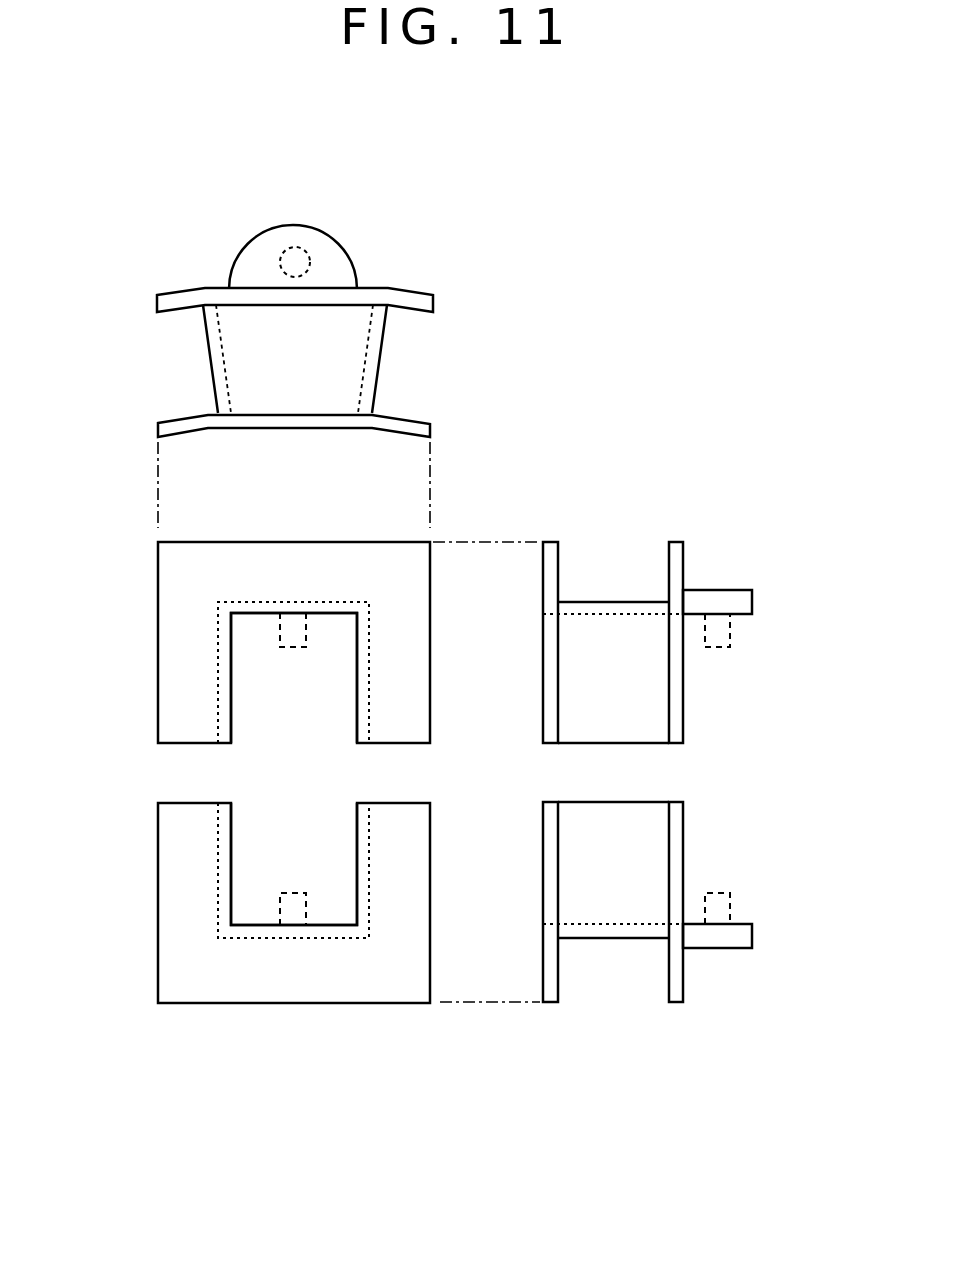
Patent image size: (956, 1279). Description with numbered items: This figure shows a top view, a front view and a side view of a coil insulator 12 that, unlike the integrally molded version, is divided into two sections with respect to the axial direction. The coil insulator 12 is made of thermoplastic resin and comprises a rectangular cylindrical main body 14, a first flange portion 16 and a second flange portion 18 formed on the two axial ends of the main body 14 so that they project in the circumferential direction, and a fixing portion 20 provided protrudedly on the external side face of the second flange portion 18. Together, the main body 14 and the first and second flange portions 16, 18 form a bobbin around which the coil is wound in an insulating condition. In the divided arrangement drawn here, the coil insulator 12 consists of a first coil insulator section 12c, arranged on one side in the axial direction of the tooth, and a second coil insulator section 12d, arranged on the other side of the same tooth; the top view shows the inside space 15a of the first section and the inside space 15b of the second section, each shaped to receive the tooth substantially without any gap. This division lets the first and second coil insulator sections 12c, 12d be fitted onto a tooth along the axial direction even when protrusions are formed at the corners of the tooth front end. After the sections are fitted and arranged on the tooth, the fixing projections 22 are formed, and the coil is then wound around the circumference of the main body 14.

The coil insulator 12 is at (437, 537).
The first coil insulator section 12c is at (360, 268).
The second coil insulator section 12d is at (157, 878).
The main body 14 is at (380, 352).
The inside space of first coil insulator section 15a is at (320, 743).
The inside space of second coil insulator section 15b is at (320, 830).
The first flange portion 16 is at (403, 418).
The second flange portion 18 is at (677, 1003).
The fixing portion 20 is at (288, 225).
The fixing projections 22 is at (280, 258).